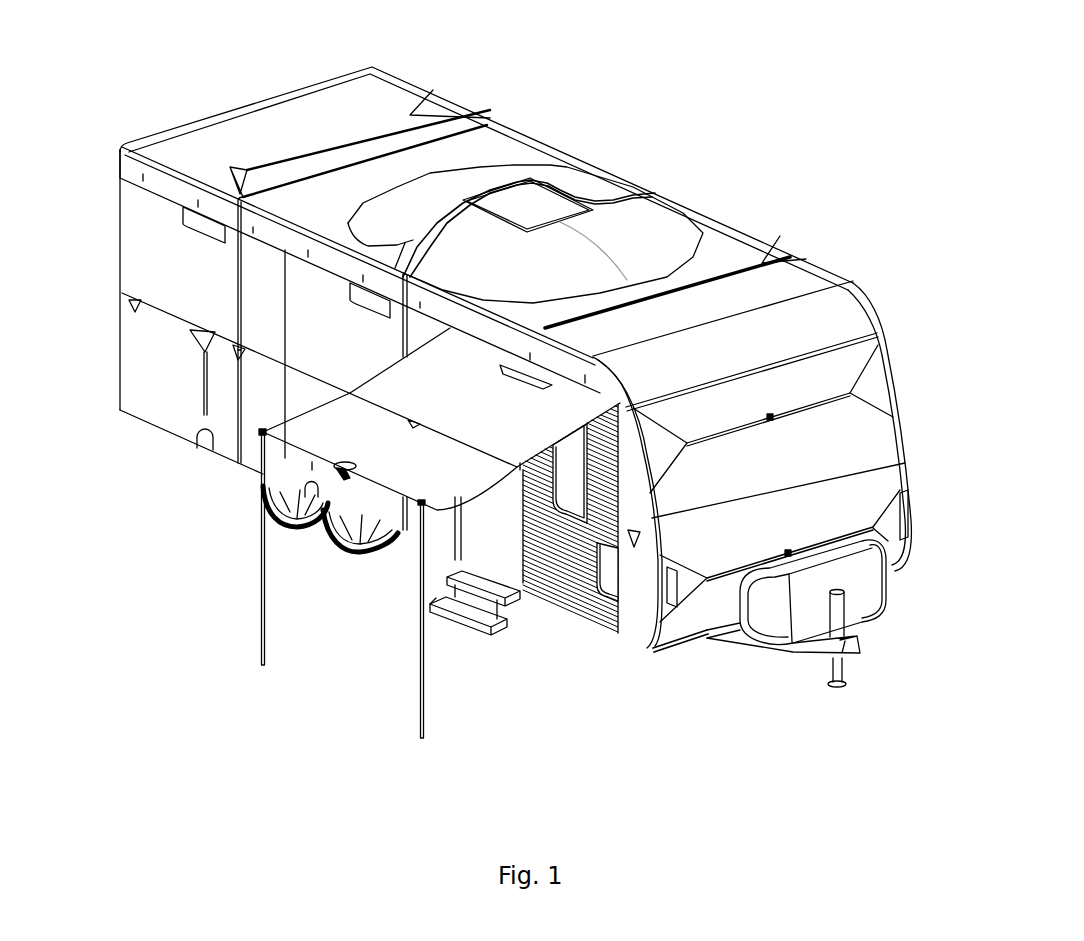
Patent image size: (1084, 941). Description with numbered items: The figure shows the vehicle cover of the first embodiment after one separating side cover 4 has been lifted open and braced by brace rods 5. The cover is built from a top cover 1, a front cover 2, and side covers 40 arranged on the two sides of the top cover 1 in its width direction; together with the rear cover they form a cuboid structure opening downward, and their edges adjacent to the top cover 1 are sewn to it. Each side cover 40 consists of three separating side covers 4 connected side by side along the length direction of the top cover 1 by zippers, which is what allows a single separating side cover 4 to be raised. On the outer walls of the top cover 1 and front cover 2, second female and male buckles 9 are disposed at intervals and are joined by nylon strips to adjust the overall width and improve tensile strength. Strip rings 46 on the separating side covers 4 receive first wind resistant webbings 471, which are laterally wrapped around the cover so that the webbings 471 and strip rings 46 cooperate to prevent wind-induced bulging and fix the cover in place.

The top cover 1 is at (499, 355).
The front cover 2 is at (850, 447).
The separating side cover 4 is at (183, 277).
The strip ring 46 is at (233, 357).
The first wind resistant webbing 471 is at (330, 160).
The second female and male buckles 9 is at (772, 405).
The brace rod 5 is at (260, 563).
The side cover 40 is at (330, 582).